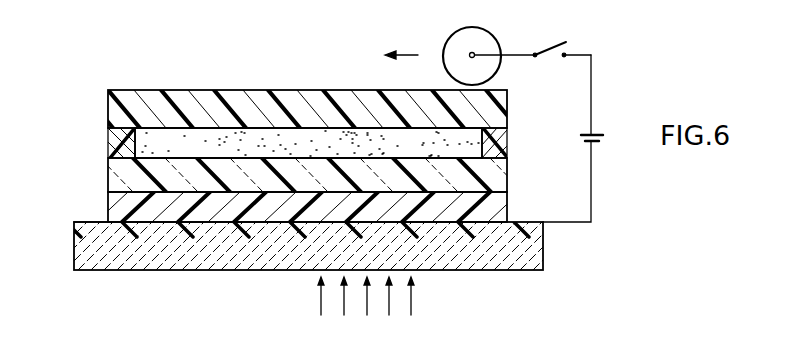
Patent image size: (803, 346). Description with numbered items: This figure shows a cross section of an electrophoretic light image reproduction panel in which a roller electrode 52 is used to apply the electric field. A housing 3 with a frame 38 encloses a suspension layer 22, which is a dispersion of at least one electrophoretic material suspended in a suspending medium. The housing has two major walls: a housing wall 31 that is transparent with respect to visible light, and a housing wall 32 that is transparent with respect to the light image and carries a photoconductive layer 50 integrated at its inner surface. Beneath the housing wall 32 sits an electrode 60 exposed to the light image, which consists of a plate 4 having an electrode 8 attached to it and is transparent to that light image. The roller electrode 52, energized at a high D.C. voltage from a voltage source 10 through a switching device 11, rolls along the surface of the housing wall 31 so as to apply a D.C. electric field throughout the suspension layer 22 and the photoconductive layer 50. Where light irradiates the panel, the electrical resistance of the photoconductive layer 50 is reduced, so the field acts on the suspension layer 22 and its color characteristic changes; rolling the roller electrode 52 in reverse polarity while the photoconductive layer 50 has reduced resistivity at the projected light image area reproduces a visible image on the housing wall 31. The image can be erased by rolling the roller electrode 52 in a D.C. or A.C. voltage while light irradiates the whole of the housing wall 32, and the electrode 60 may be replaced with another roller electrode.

The housing 3 is at (108, 90).
The plate 4 is at (74, 264).
The electrode 8 is at (70, 233).
The voltage source 10 is at (596, 133).
The switching device 11 is at (551, 85).
The suspension layer 22 is at (195, 140).
The housing wall 31 is at (108, 100).
The housing wall 32 is at (102, 210).
The frame 38 is at (108, 138).
The photoconductive layer 50 is at (102, 178).
The roller electrode 52 is at (494, 38).
The electrode 60 is at (74, 222).